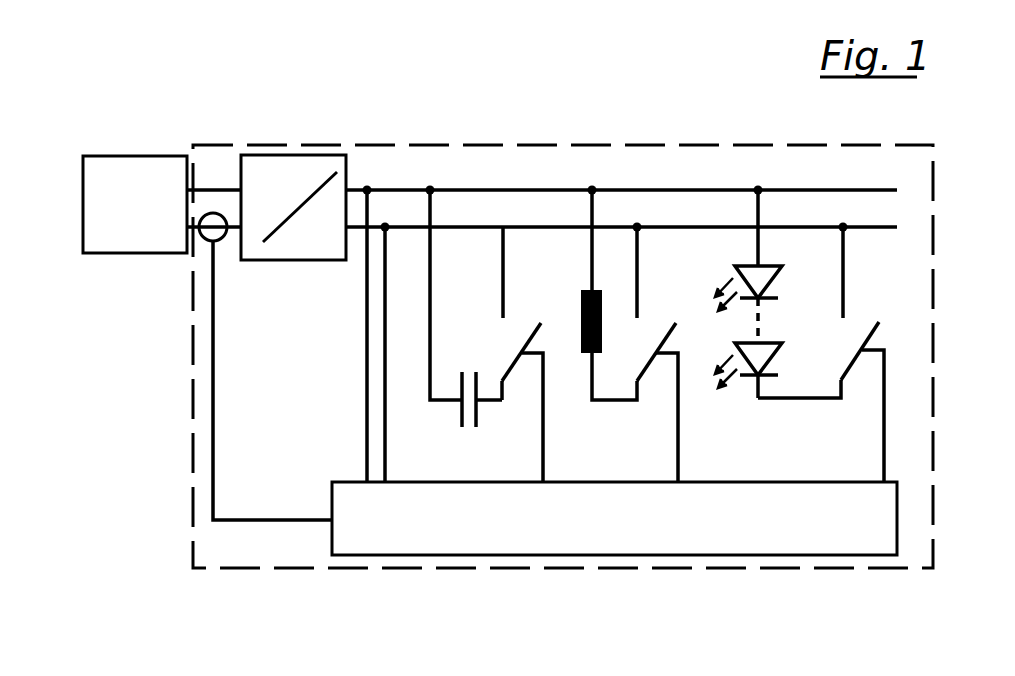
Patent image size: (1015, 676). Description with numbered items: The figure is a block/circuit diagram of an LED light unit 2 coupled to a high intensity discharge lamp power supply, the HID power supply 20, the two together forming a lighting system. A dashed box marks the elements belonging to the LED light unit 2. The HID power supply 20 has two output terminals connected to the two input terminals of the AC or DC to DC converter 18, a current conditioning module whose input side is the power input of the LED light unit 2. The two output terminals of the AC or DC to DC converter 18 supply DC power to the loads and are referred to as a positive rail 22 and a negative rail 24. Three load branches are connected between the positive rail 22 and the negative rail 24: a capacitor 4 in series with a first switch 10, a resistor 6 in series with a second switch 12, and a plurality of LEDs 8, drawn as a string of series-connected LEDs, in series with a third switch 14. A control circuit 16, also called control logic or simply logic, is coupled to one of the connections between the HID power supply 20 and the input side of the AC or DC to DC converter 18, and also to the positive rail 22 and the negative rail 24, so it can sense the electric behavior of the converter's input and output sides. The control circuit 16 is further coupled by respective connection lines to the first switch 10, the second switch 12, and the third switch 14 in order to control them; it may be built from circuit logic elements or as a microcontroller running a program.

The LED light unit 2 is at (935, 370).
The capacitor 4 is at (461, 419).
The resistor 6 is at (583, 353).
The plurality of LEDs 8 is at (724, 405).
The first switch 10 is at (523, 342).
The second switch 12 is at (657, 342).
The third switch 14 is at (867, 338).
The control circuit 16 is at (768, 478).
The AC or DC to DC converter 18 is at (298, 263).
The HID power supply 20 is at (133, 253).
The positive rail 22 is at (873, 186).
The negative rail 24 is at (870, 222).